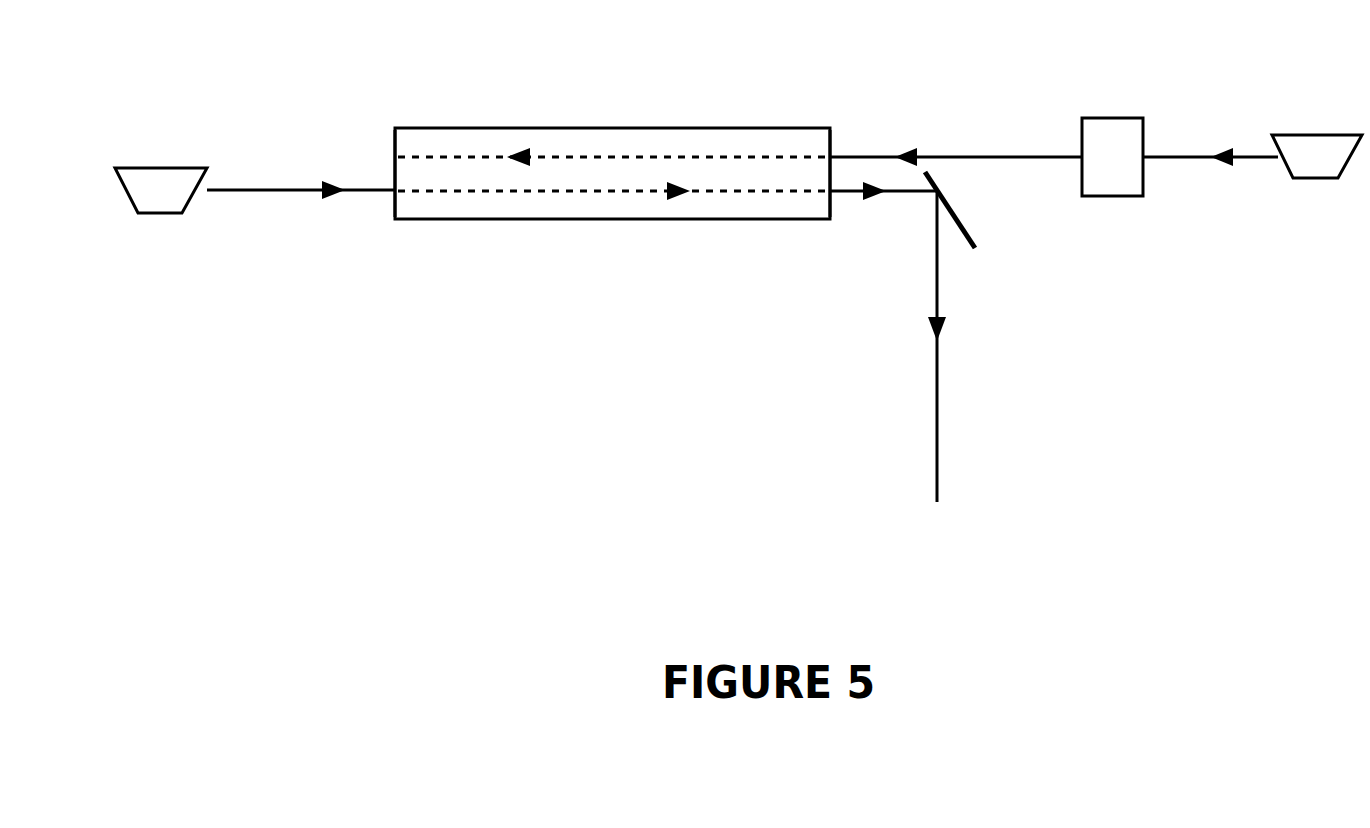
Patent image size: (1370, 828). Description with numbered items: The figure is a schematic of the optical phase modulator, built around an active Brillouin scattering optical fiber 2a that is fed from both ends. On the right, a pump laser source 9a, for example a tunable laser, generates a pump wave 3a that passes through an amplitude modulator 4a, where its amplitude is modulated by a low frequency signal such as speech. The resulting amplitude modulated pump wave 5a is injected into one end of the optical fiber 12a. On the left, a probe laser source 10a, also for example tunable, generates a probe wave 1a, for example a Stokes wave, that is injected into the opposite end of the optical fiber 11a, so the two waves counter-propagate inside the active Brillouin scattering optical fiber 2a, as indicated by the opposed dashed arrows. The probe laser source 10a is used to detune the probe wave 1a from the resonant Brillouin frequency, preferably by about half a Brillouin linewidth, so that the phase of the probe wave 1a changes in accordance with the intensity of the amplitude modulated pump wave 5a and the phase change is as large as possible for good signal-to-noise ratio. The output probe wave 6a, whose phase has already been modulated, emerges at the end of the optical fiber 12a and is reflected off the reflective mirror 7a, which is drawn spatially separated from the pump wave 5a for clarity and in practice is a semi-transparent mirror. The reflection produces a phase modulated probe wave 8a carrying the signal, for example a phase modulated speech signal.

The probe wave 1a is at (258, 190).
The active Brillouin scattering optical fiber 2a is at (680, 126).
The pump wave 3a is at (1256, 155).
The amplitude modulator 4a is at (1133, 116).
The amplitude modulated pump wave 5a is at (1043, 155).
The output probe wave 6a is at (926, 196).
The reflective mirror 7a is at (1020, 207).
The phase modulated probe wave 8a is at (938, 409).
The pump laser source 9a is at (1355, 133).
The probe laser source 10a is at (140, 216).
The opposite end of the optical fiber 11a is at (393, 140).
The one end of the optical fiber 12a is at (877, 100).